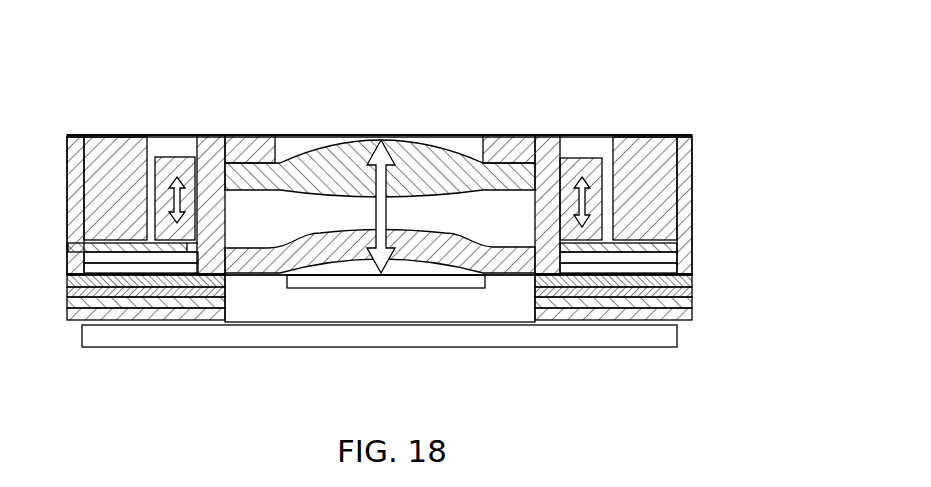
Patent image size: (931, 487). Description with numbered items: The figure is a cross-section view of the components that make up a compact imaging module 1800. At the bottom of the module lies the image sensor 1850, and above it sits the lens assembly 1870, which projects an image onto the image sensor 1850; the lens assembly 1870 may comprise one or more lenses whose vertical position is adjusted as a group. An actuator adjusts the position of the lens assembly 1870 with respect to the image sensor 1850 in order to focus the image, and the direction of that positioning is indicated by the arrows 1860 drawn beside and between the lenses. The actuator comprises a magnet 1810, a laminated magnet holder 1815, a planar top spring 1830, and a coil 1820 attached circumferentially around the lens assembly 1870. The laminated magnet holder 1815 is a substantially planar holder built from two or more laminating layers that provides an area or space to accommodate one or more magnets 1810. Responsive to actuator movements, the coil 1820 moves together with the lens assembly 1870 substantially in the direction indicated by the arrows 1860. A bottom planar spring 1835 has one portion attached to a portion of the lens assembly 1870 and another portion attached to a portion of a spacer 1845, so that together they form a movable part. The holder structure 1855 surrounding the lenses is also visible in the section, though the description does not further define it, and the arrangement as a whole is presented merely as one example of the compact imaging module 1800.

The compact imaging module 1800 is at (281, 38).
The magnet 1810 is at (672, 202).
The laminated magnet holder 1815 is at (697, 135).
The coil 1820 is at (586, 158).
The planar top spring 1830 is at (651, 135).
The bottom planar spring 1835 is at (642, 275).
The spacer 1845 is at (702, 275).
The image sensor 1850 is at (313, 347).
The lens holder 1855 is at (224, 262).
The arrows 1860 is at (170, 178).
The lens assembly 1870 is at (333, 150).